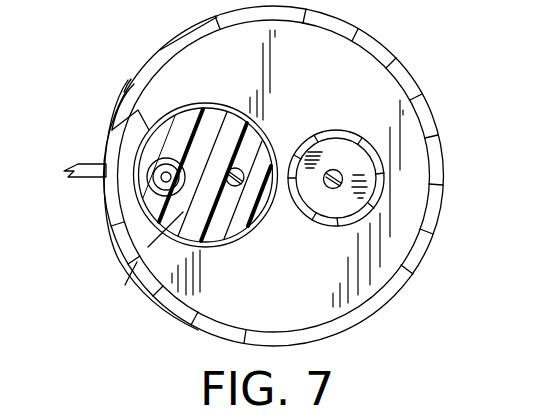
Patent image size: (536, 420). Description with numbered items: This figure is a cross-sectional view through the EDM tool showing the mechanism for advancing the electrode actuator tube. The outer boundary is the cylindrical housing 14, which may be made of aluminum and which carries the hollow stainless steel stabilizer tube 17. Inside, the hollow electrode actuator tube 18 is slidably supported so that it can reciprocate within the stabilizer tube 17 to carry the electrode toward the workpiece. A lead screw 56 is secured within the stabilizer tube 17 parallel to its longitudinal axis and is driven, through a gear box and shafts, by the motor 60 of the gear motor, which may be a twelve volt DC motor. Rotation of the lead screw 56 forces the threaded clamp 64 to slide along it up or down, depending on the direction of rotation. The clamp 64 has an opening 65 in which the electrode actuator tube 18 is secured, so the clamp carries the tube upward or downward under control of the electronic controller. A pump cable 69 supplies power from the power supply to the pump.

The cylindrical housing 14 is at (414, 84).
The stabilizer tube 17 is at (130, 84).
The electrode actuator tube 18 is at (119, 205).
The lead screw 56 is at (250, 228).
The motor 60 is at (327, 126).
The clamp 64 is at (152, 191).
The opening 65 is at (137, 262).
The pump cable 69 is at (65, 185).